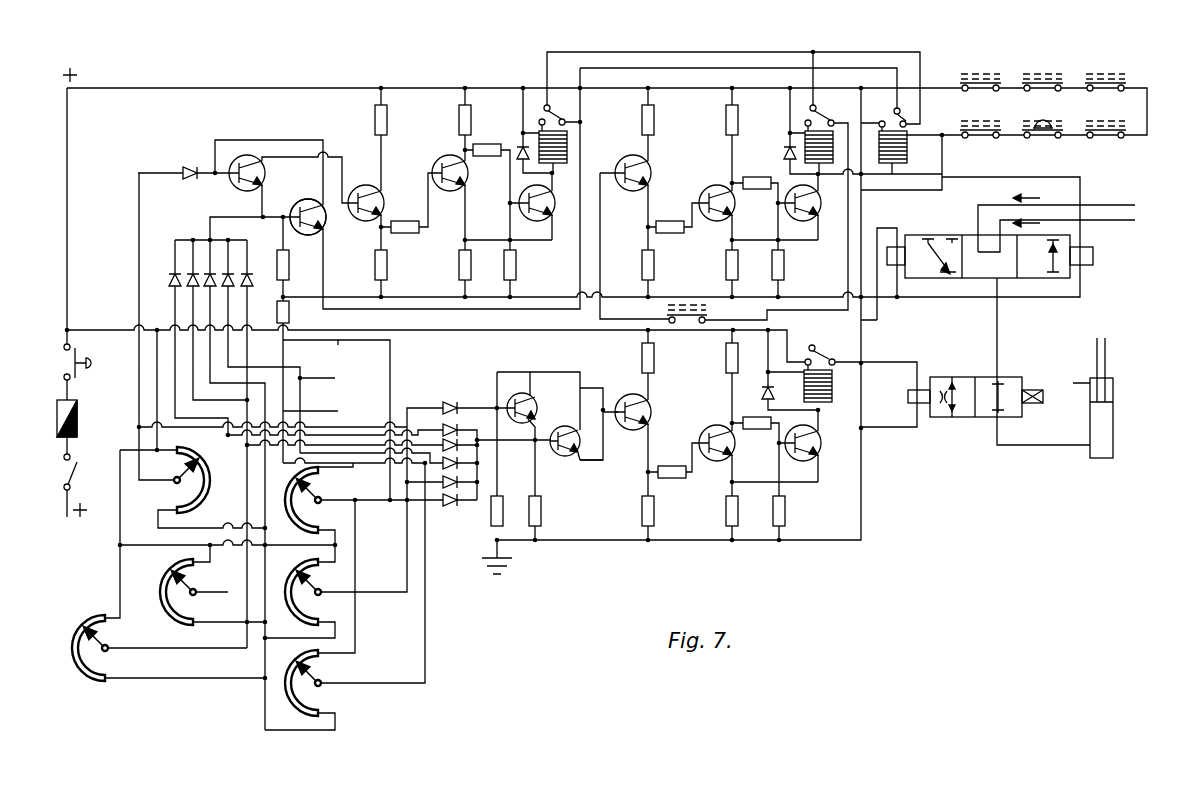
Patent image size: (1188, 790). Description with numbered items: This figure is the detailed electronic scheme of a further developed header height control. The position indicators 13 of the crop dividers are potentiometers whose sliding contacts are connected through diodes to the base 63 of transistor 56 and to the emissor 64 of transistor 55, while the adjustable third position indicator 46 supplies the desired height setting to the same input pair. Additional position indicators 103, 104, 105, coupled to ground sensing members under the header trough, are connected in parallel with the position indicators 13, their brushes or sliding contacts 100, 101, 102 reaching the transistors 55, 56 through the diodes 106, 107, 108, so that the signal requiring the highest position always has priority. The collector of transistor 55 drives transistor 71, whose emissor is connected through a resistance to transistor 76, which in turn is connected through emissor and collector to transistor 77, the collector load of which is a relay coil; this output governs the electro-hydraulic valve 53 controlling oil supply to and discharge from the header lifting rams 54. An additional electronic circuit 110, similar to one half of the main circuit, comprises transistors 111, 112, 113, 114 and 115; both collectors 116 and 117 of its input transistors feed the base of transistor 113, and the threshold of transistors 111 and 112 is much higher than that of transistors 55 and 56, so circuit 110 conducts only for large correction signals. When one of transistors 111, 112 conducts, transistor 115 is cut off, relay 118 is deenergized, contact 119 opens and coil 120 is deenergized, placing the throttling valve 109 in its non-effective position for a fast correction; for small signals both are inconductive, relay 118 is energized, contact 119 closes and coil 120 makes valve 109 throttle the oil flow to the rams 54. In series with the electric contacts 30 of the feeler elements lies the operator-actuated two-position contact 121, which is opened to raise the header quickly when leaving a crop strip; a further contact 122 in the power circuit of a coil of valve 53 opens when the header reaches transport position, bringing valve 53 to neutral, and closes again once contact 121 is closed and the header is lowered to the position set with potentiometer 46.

The position indicators 13 is at (100, 617).
The electric contacts 30 is at (982, 80).
The adjustable third position indicator 46 is at (210, 492).
The electro-hydraulic valve 53 is at (1007, 280).
The header lifting rams 54 is at (1090, 435).
The transistor 55 is at (215, 185).
The transistor 56 is at (323, 222).
The base 63 is at (292, 210).
The emissor 64 is at (262, 190).
The transistor 71 is at (652, 172).
The transistor 76 is at (732, 214).
The transistor 77 is at (825, 205).
The brush or sliding contact 100 is at (322, 485).
The brush or sliding contact 101 is at (323, 590).
The brush or sliding contact 102 is at (322, 681).
The additional position indicator 103 is at (300, 530).
The additional position indicator 104 is at (315, 618).
The additional position indicator 105 is at (315, 712).
The diode 106 is at (277, 258).
The diode 107 is at (210, 288).
The diode 108 is at (275, 295).
The throttling valve 109 is at (985, 412).
The additional electronic circuit 110 is at (487, 399).
The transistor 111 is at (530, 395).
The transistor 112 is at (562, 457).
The transistor 113 is at (650, 405).
The transistor 114 is at (715, 462).
The transistor 115 is at (822, 448).
The collector 116 is at (528, 400).
The collector 117 is at (585, 462).
The relay 118 is at (832, 393).
The contact 119 is at (828, 343).
The coil 120 is at (912, 404).
The contact 121 is at (1044, 140).
The contact 122 is at (690, 325).